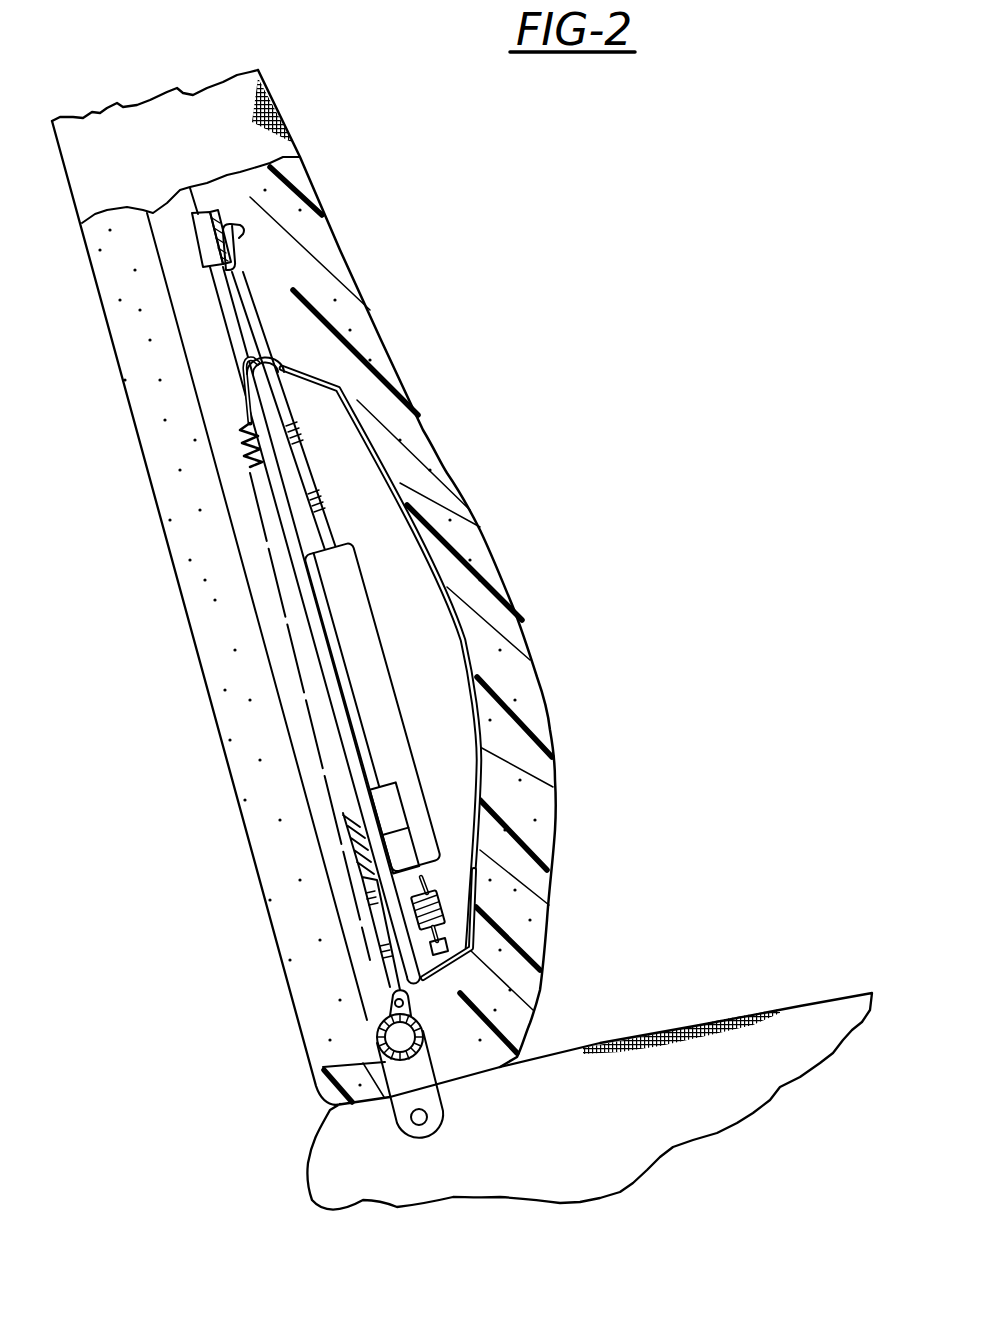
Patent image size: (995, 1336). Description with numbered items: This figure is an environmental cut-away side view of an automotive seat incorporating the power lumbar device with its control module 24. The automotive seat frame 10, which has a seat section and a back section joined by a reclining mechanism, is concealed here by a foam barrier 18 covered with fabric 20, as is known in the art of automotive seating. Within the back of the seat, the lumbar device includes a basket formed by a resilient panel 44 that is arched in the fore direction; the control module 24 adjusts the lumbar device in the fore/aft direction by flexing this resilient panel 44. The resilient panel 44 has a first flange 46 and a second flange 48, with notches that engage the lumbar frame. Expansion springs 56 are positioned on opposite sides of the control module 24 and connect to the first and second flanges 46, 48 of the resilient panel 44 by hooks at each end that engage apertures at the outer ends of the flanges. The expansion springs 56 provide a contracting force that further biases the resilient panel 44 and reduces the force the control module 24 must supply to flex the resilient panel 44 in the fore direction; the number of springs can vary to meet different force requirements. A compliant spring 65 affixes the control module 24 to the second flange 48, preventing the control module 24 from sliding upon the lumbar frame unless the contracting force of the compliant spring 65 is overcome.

The automotive seat frame 10 is at (280, 340).
The foam barrier 18 is at (290, 212).
The fabric 20 is at (380, 333).
The control module 24 is at (387, 660).
The resilient panel 44 is at (397, 480).
The first flange 46 is at (317, 380).
The second flange 48 is at (450, 967).
The expansion springs 56 is at (292, 626).
The compliant spring 65 is at (445, 898).